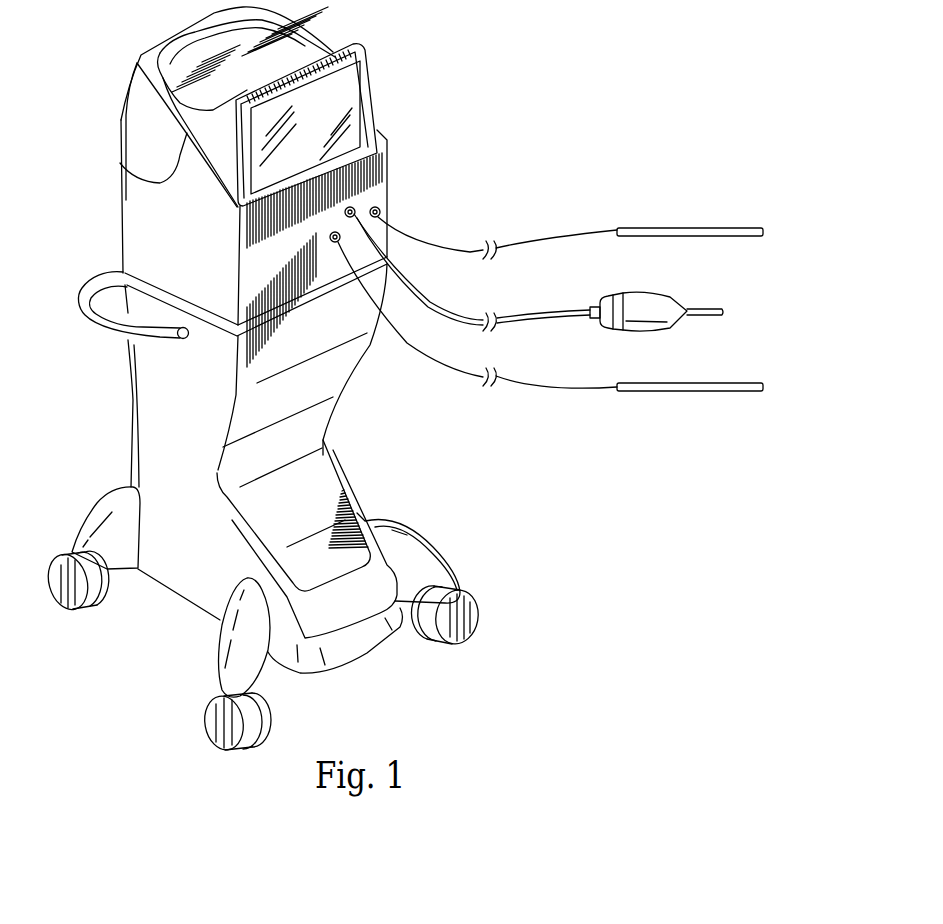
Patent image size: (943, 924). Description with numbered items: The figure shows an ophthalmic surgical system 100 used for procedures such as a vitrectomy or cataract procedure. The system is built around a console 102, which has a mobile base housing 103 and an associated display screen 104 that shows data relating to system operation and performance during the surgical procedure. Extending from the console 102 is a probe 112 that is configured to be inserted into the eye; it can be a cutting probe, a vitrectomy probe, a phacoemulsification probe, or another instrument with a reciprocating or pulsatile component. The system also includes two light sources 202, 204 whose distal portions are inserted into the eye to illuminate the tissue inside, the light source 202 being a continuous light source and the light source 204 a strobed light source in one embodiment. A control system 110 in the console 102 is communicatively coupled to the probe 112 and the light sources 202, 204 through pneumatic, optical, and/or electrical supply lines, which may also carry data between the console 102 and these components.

The ophthalmic surgical system 100 is at (519, 63).
The console 102 is at (360, 356).
The mobile base housing 103 is at (137, 407).
The display screen 104 is at (353, 74).
The control system 110 is at (386, 192).
The probe 112 is at (645, 297).
The light source 202 is at (690, 227).
The light source 204 is at (688, 391).